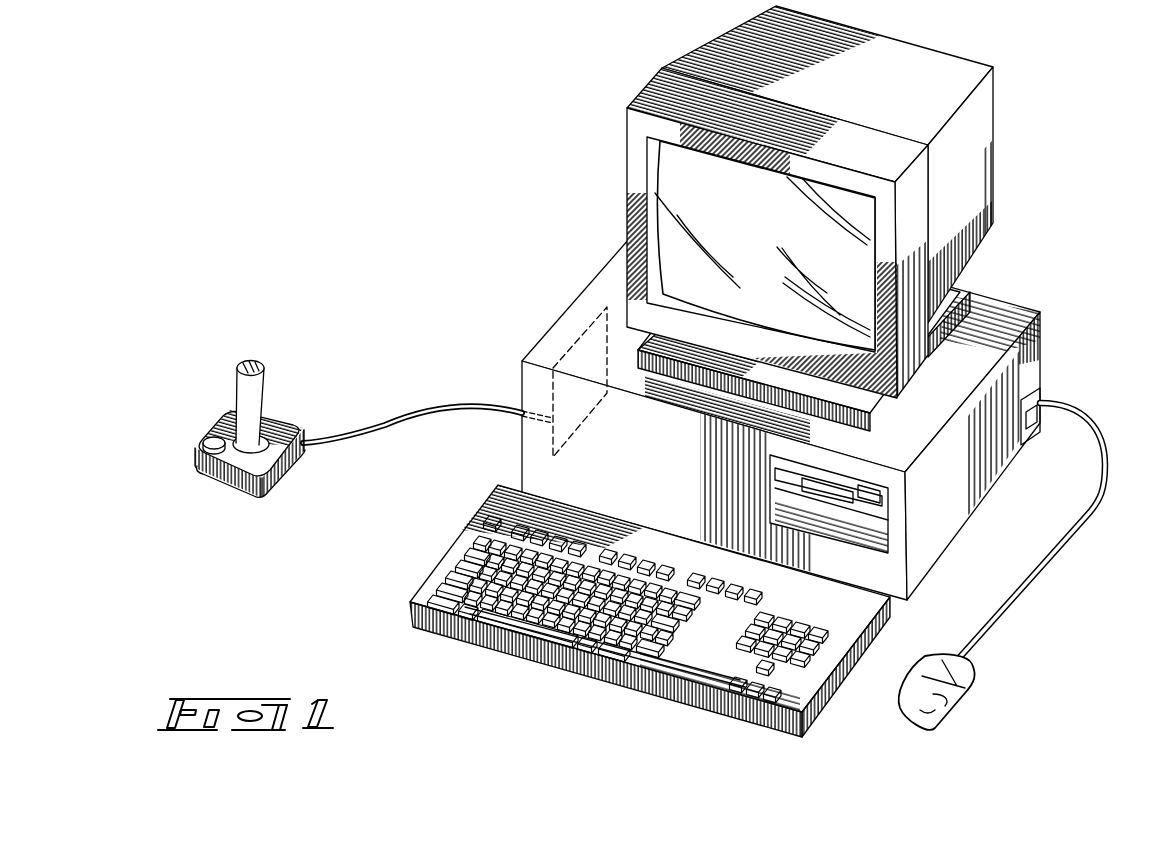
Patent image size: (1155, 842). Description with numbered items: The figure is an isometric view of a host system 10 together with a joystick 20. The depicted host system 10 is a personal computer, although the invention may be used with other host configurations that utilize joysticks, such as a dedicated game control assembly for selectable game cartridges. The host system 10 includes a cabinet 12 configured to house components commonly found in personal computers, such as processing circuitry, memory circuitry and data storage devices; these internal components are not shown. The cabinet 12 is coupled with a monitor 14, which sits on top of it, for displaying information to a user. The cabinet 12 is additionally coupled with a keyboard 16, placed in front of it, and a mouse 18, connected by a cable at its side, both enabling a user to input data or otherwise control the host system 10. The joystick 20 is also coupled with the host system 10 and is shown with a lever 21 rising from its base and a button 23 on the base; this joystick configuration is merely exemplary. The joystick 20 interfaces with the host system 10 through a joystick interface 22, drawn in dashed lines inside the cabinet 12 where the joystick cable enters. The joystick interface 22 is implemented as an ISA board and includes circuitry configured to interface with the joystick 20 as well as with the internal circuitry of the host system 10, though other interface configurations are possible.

The host system 10 is at (457, 140).
The cabinet 12 is at (997, 317).
The monitor 14 is at (970, 148).
The keyboard 16 is at (803, 690).
The mouse 18 is at (955, 703).
The joystick 20 is at (285, 415).
The lever 21 is at (247, 400).
The joystick interface 22 is at (582, 337).
The button 23 is at (210, 437).